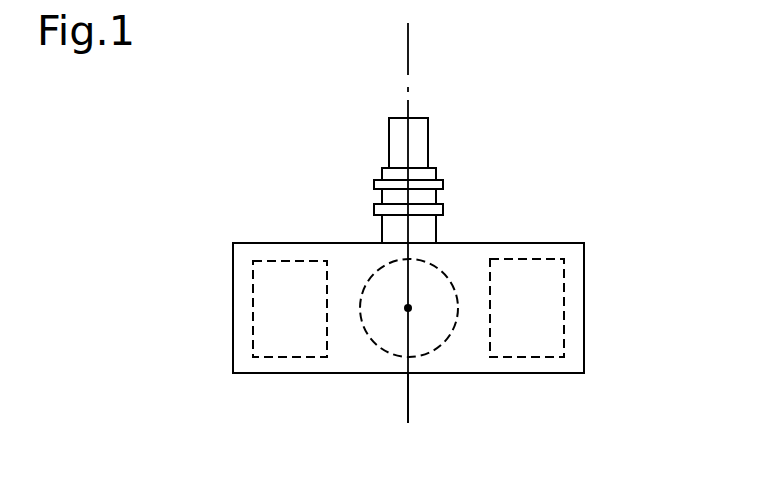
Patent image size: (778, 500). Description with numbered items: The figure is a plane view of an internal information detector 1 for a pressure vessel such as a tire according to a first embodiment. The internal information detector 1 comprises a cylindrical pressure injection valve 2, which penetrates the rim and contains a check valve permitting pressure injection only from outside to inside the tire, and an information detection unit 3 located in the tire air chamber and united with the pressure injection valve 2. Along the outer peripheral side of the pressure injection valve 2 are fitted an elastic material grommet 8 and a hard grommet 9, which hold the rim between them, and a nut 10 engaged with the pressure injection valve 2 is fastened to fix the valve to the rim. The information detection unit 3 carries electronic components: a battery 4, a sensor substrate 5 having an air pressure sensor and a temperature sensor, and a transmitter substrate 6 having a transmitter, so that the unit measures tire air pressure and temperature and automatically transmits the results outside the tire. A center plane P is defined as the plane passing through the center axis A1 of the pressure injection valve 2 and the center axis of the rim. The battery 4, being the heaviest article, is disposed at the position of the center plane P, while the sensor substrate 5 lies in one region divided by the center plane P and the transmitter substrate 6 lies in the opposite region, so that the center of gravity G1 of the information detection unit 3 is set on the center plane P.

The internal information detector 1 is at (588, 277).
The pressure injection valve 2 is at (422, 138).
The information detection unit 3 is at (572, 349).
The battery 4 is at (445, 272).
The sensor substrate 5 is at (295, 258).
The transmitter substrate 6 is at (537, 258).
The elastic material grommet 8 is at (375, 210).
The hard grommet 9 is at (375, 186).
The nut 10 is at (390, 177).
The center plane P is at (412, 42).
The center of gravity G1 is at (406, 309).
The center axis A1 is at (410, 400).